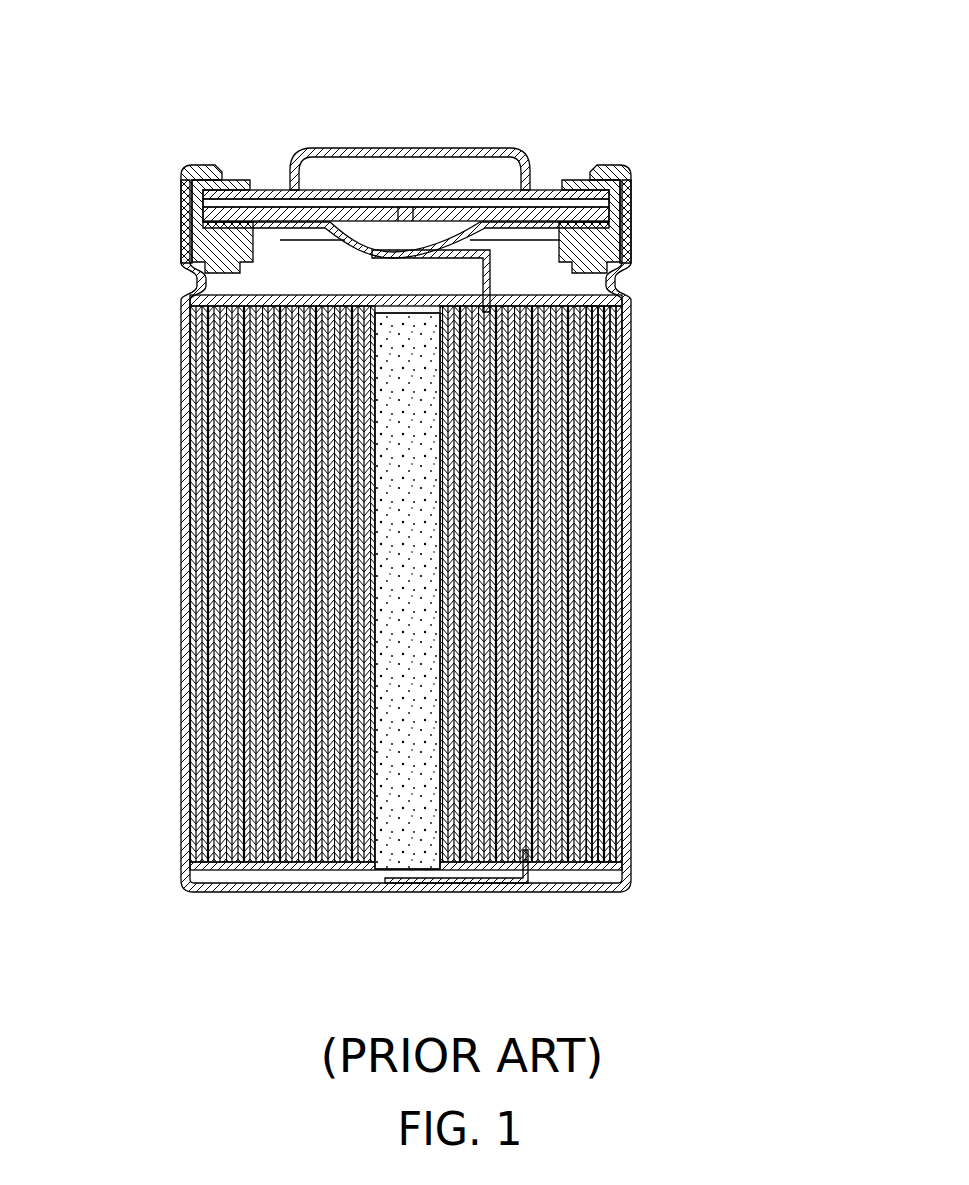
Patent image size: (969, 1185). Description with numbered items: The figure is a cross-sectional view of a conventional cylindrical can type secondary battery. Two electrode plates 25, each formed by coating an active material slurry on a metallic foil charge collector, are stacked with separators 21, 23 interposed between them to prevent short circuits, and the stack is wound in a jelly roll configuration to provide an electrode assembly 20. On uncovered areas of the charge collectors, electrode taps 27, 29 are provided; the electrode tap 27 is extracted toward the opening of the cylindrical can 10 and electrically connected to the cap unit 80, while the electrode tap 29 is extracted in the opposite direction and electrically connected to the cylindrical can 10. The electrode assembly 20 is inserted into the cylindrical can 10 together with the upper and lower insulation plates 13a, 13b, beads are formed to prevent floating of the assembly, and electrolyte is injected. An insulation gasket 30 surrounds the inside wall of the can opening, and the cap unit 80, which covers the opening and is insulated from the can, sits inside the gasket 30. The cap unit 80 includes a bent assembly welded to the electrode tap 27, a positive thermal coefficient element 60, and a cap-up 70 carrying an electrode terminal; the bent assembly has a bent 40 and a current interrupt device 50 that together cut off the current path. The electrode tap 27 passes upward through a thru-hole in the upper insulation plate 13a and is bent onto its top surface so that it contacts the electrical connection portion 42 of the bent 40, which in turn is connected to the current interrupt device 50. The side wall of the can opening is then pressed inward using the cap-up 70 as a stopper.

The cylindrical can 10 is at (183, 347).
The upper insulation plate 13a is at (197, 287).
The lower insulation plate 13b is at (283, 870).
The electrode assembly 20 is at (501, 579).
The separator 21 is at (590, 466).
The separator 23 is at (600, 398).
The electrode plate 25 is at (612, 350).
The electrode tap 27 is at (600, 292).
The electrode tap 29 is at (528, 891).
The insulation gasket 30 is at (622, 172).
The bent 40 is at (307, 198).
The electrical connection portion 42 is at (558, 44).
The current interrupt device 50 is at (473, 210).
The positive thermal coefficient element 60 is at (562, 192).
The cap-up 70 is at (410, 150).
The cap unit 80 is at (406, 130).